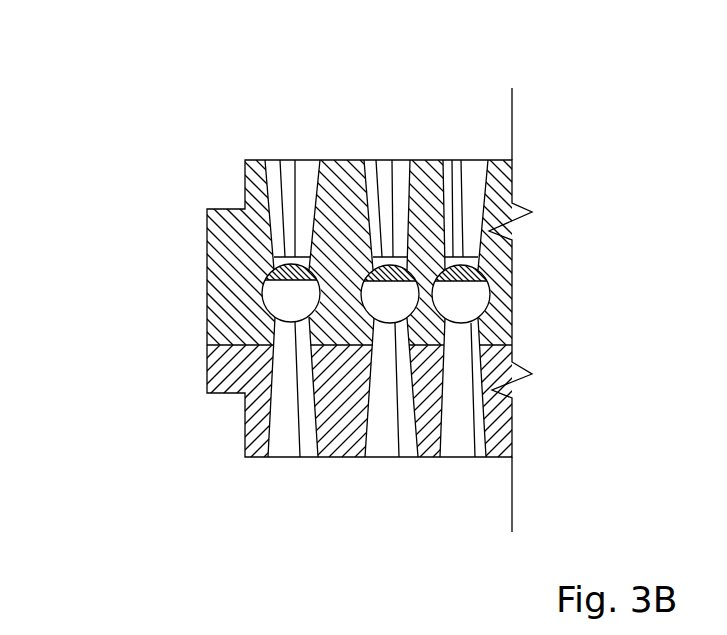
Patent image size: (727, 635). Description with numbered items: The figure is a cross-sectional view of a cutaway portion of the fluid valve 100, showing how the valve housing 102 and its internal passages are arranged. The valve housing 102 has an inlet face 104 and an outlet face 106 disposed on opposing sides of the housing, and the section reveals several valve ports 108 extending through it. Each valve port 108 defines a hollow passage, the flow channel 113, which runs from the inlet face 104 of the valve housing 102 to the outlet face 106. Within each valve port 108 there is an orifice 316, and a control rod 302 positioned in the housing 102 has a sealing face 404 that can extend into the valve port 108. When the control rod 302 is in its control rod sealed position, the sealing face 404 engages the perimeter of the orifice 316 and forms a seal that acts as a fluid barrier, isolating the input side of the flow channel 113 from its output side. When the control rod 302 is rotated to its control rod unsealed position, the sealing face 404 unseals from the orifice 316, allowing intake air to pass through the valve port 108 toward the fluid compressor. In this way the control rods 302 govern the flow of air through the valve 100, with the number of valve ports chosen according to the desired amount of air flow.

The valve 100 is at (200, 185).
The valve housing 102 is at (208, 266).
The inlet face 104 is at (252, 160).
The outlet face 106 is at (250, 458).
The valve port 108 is at (310, 183).
The flow channel 113 is at (278, 448).
The control rod 302 is at (302, 457).
The orifice 316 is at (376, 160).
The sealing face 404 is at (280, 160).